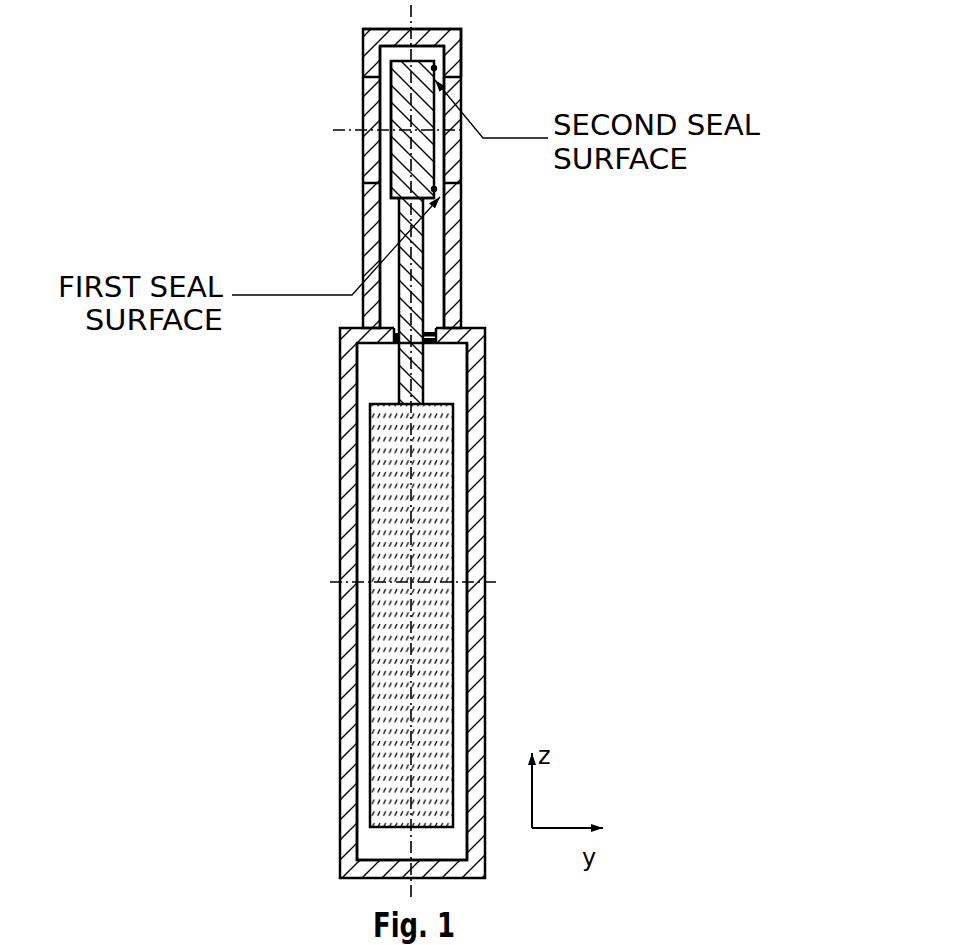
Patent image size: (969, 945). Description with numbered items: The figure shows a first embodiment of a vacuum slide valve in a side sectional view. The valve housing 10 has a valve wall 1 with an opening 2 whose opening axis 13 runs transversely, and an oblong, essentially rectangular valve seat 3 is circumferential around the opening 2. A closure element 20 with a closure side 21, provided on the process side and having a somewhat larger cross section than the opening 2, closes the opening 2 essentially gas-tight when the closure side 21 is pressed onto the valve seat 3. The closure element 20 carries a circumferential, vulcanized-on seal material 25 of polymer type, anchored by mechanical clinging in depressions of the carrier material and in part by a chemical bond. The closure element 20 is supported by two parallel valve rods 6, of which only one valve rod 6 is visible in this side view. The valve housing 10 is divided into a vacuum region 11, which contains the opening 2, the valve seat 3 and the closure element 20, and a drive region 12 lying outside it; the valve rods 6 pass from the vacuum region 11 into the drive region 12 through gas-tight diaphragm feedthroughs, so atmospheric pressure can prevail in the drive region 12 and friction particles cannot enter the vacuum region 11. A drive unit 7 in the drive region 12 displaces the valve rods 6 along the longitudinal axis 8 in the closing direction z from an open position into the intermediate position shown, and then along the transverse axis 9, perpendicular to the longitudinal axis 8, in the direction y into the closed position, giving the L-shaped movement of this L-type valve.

The valve wall 1 is at (455, 266).
The opening 2 is at (455, 88).
The valve seat 3 is at (447, 185).
The valve rod 6 is at (407, 377).
The drive unit 7 is at (445, 502).
The longitudinal axis 8 is at (412, 17).
The transverse axis 9 is at (330, 582).
The valve housing 10 is at (345, 336).
The vacuum region 11 is at (393, 203).
The drive region 12 is at (375, 372).
The opening axis 13 is at (333, 130).
The closure element 20 is at (400, 148).
The closure side 21 is at (428, 143).
The seal material 25 is at (436, 67).